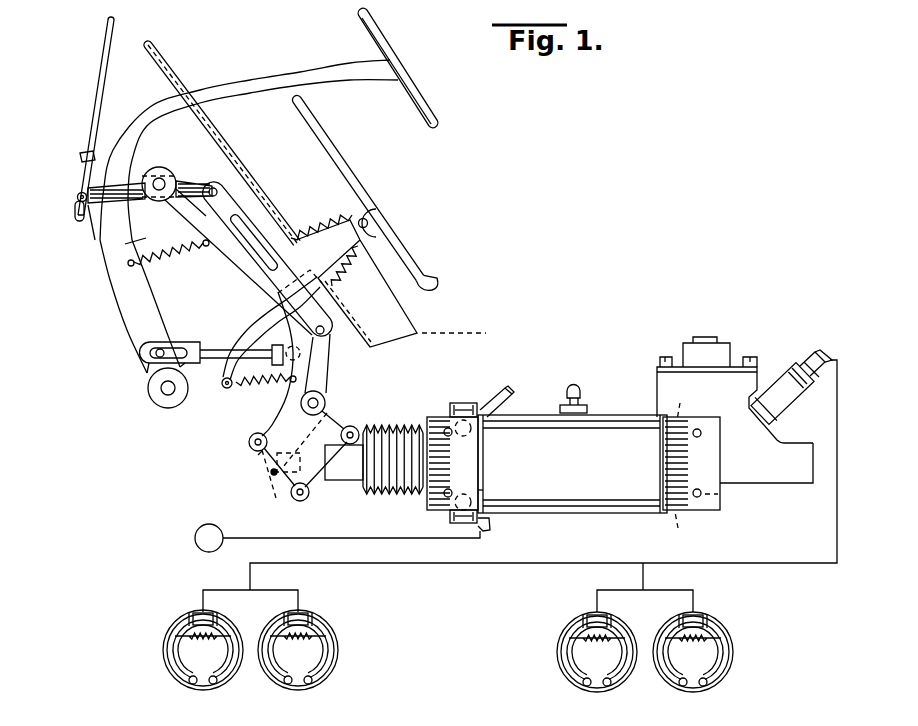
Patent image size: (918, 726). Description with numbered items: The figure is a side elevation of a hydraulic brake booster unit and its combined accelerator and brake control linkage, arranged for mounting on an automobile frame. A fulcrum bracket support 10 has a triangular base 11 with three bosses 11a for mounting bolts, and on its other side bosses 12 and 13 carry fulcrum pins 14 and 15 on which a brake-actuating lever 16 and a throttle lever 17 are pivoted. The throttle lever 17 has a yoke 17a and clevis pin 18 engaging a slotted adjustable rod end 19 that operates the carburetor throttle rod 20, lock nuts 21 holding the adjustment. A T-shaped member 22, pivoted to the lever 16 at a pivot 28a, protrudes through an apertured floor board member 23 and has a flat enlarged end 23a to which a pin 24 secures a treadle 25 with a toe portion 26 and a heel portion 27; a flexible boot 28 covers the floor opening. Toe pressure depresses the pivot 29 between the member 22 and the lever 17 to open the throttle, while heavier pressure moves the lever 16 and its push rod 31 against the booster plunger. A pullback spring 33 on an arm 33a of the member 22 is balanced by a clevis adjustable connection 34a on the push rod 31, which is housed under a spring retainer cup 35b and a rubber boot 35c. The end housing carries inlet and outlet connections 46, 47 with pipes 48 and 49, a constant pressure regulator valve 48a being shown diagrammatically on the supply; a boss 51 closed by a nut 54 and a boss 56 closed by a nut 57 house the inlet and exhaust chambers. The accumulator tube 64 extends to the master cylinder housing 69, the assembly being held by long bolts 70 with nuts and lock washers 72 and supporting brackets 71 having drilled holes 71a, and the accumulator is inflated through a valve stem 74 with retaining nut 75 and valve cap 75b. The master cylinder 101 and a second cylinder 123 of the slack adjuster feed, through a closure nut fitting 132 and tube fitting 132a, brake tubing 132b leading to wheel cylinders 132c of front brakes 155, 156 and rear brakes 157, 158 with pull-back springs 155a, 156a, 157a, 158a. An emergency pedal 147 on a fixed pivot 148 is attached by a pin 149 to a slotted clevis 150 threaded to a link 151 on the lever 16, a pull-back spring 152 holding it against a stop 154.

The fulcrum bracket support 10 is at (208, 260).
The triangular base 11 is at (256, 458).
The bosses 11a is at (250, 438).
The boss 12 is at (290, 386).
The boss 13 is at (160, 168).
The fulcrum pin 14 is at (326, 403).
The fulcrum pin 15 is at (165, 191).
The brake-actuating lever 16 is at (332, 343).
The throttle lever 17 is at (191, 181).
The yoke 17a is at (93, 233).
The clevis pin 18 is at (78, 195).
The slotted adjustable rod end 19 is at (76, 222).
The carburetor throttle rod 20 is at (107, 52).
The lock nuts 21 is at (83, 153).
The T-shaped member 22 is at (264, 240).
The floor board member 23 is at (422, 333).
The flat enlarged end 23a is at (364, 242).
The pin 24 is at (370, 223).
The treadle 25 is at (372, 218).
The toe portion 26 is at (303, 102).
The heel portion 27 is at (432, 280).
The flexible boot 28 is at (318, 225).
The pivot 28a is at (338, 322).
The pivot 29 is at (214, 188).
The push rod 31 is at (310, 440).
The pullback spring 33 is at (236, 389).
The arm 33a is at (247, 337).
The clevis adjustable connection 34a is at (280, 486).
The spring retainer cup 35b is at (347, 482).
The rubber boot 35c is at (396, 496).
The inlet connection 46 is at (479, 490).
The outlet connection 47 is at (479, 433).
The pipe 48 is at (489, 524).
The constant pressure regulator valve 48a is at (199, 533).
The pipe 49 is at (498, 390).
The boss 51 is at (452, 518).
The closure nut 54 is at (462, 526).
The boss 56 is at (453, 412).
The nut 57 is at (460, 401).
The tube 64 is at (577, 478).
The master cylinder housing 69 is at (651, 368).
The long bolts 70 is at (600, 425).
The supporting brackets 71 is at (430, 420).
The drilled holes 71a is at (449, 489).
The nuts and lock washers 72 is at (586, 463).
The valve stem 74 is at (583, 397).
The retaining nut 75 is at (560, 409).
The valve cap 75b is at (572, 387).
The master cylinder 101 is at (780, 476).
The second cylinder 123 is at (786, 404).
The closure nut fitting 132 is at (800, 368).
The tube fitting 132a is at (807, 363).
The brake tubing 132b is at (823, 357).
The wheel cylinders 132c is at (193, 613).
The second long range pedal 147 is at (384, 47).
The fixed pivot 148 is at (165, 390).
The pin 149 is at (142, 353).
The slotted clevis 150 is at (148, 370).
The link 151 is at (212, 346).
The pull-back spring 152 is at (172, 262).
The stop 154 is at (133, 250).
The front wheel brake 155 is at (167, 676).
The brake shoe pull-back spring 155a is at (186, 650).
The front wheel brake 156 is at (332, 678).
The brake shoe pull-back spring 156a is at (312, 652).
The rear wheel brake 157 is at (565, 681).
The brake shoe pull-back spring 157a is at (582, 654).
The rear wheel brake 158 is at (728, 681).
The brake shoe pull-back spring 158a is at (708, 654).